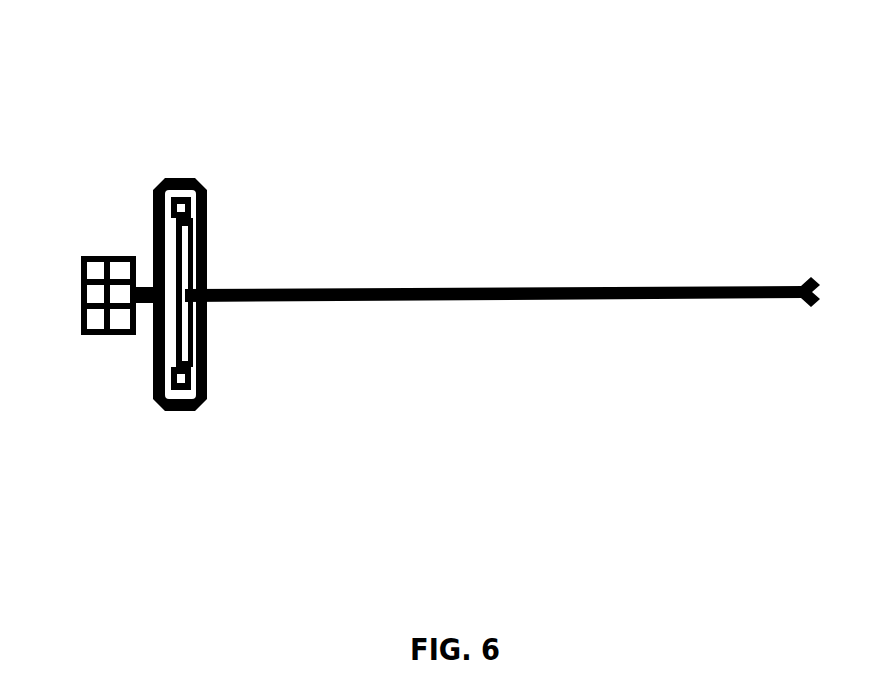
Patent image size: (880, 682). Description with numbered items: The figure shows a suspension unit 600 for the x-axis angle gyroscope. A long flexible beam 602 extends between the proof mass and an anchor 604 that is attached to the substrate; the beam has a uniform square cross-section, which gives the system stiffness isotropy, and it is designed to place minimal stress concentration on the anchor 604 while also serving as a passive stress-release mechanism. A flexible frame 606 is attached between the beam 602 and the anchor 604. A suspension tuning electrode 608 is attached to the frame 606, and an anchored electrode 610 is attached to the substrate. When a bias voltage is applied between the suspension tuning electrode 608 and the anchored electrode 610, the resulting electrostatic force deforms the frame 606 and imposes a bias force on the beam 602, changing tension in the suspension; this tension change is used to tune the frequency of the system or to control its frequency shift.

The suspension unit 600 is at (487, 58).
The flexible beam 602 is at (440, 300).
The anchor 604 is at (78, 257).
The flexible frame 606 is at (155, 190).
The suspension tuning electrode 608 is at (190, 263).
The anchored electrode 610 is at (190, 382).